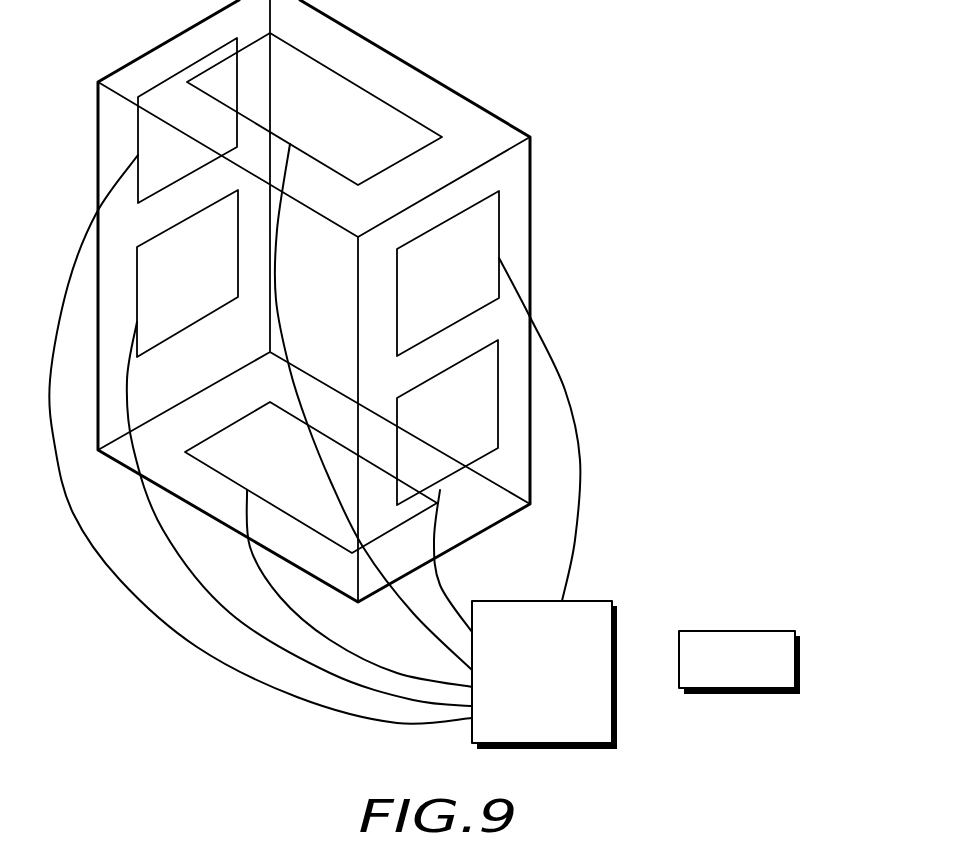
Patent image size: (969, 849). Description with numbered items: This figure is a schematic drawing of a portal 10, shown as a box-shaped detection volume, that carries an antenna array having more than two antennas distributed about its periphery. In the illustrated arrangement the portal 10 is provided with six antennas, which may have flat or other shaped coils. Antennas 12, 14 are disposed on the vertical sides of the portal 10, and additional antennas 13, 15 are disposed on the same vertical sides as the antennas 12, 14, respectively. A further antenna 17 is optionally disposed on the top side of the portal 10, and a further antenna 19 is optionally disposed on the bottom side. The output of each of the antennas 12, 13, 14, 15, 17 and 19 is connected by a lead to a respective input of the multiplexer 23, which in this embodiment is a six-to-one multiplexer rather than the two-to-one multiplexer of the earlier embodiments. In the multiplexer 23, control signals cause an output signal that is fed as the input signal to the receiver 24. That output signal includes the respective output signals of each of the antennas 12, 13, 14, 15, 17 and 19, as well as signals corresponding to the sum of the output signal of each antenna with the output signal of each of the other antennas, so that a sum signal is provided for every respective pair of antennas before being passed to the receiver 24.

The portal 10 is at (477, 104).
The antenna 12 is at (172, 289).
The additional antenna 13 is at (181, 133).
The antenna 14 is at (436, 442).
The additional antenna 15 is at (468, 295).
The further antenna 17 is at (343, 142).
The further antenna 19 is at (288, 487).
The multiplexer 23 is at (583, 600).
The receiver 24 is at (743, 631).